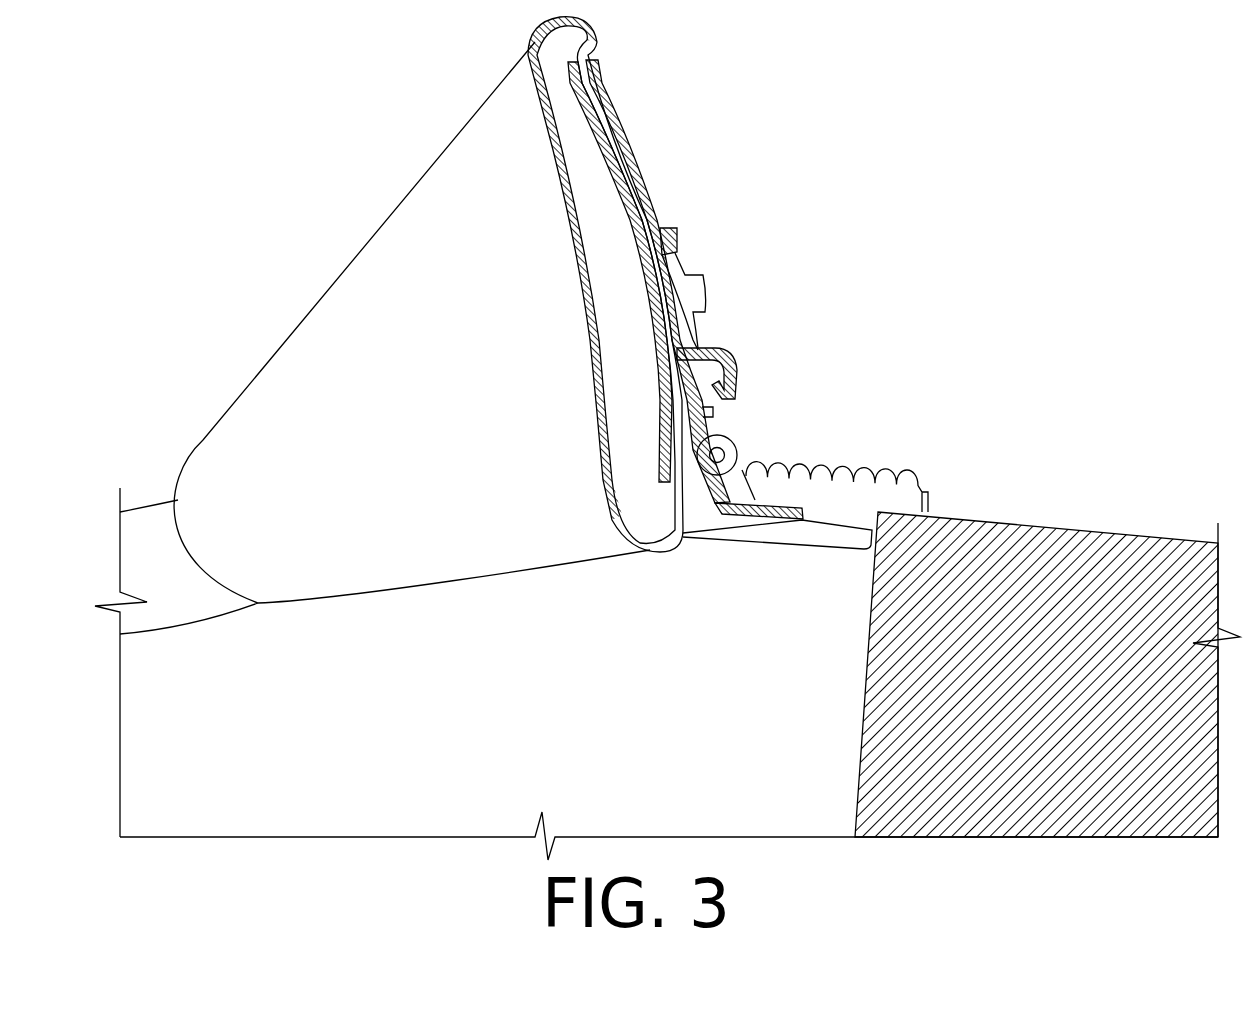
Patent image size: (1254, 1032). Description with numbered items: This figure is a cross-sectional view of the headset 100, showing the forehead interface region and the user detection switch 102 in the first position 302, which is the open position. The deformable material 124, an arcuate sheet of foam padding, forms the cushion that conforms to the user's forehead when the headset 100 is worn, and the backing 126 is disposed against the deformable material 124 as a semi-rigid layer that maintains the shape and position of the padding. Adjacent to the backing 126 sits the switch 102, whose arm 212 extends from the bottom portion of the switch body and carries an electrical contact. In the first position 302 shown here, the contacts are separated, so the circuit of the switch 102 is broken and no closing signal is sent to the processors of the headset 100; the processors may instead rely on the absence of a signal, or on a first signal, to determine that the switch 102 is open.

The headset 100 is at (1073, 135).
The deformable material 124 is at (450, 140).
The backing 126 is at (657, 192).
The user detection switch 102 is at (720, 332).
The arm 212 is at (735, 372).
The first position 302 is at (743, 407).